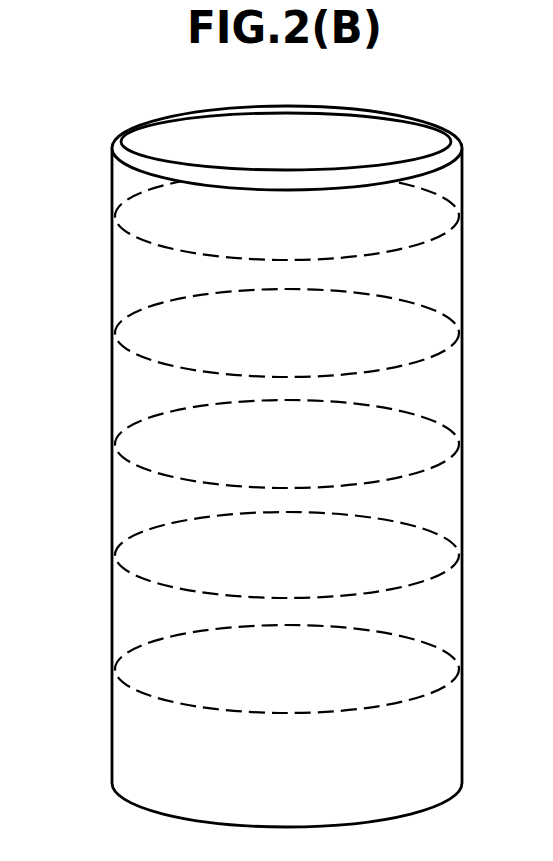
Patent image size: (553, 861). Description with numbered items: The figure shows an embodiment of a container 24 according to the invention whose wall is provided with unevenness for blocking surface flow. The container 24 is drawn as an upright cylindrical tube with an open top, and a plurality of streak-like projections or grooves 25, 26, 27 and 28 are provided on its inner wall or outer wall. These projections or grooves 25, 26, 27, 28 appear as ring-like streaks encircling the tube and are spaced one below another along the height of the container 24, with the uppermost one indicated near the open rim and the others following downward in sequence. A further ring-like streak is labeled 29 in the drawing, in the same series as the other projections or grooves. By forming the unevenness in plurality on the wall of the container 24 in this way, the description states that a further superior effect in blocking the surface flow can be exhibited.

The container 24 is at (111, 283).
The streak-like projection or groove 25 is at (367, 168).
The streak-like projection or groove 26 is at (432, 311).
The streak-like projection or groove 27 is at (440, 431).
The streak-like projection or groove 28 is at (436, 550).
The fourth sensing electrode ring 29 is at (450, 657).